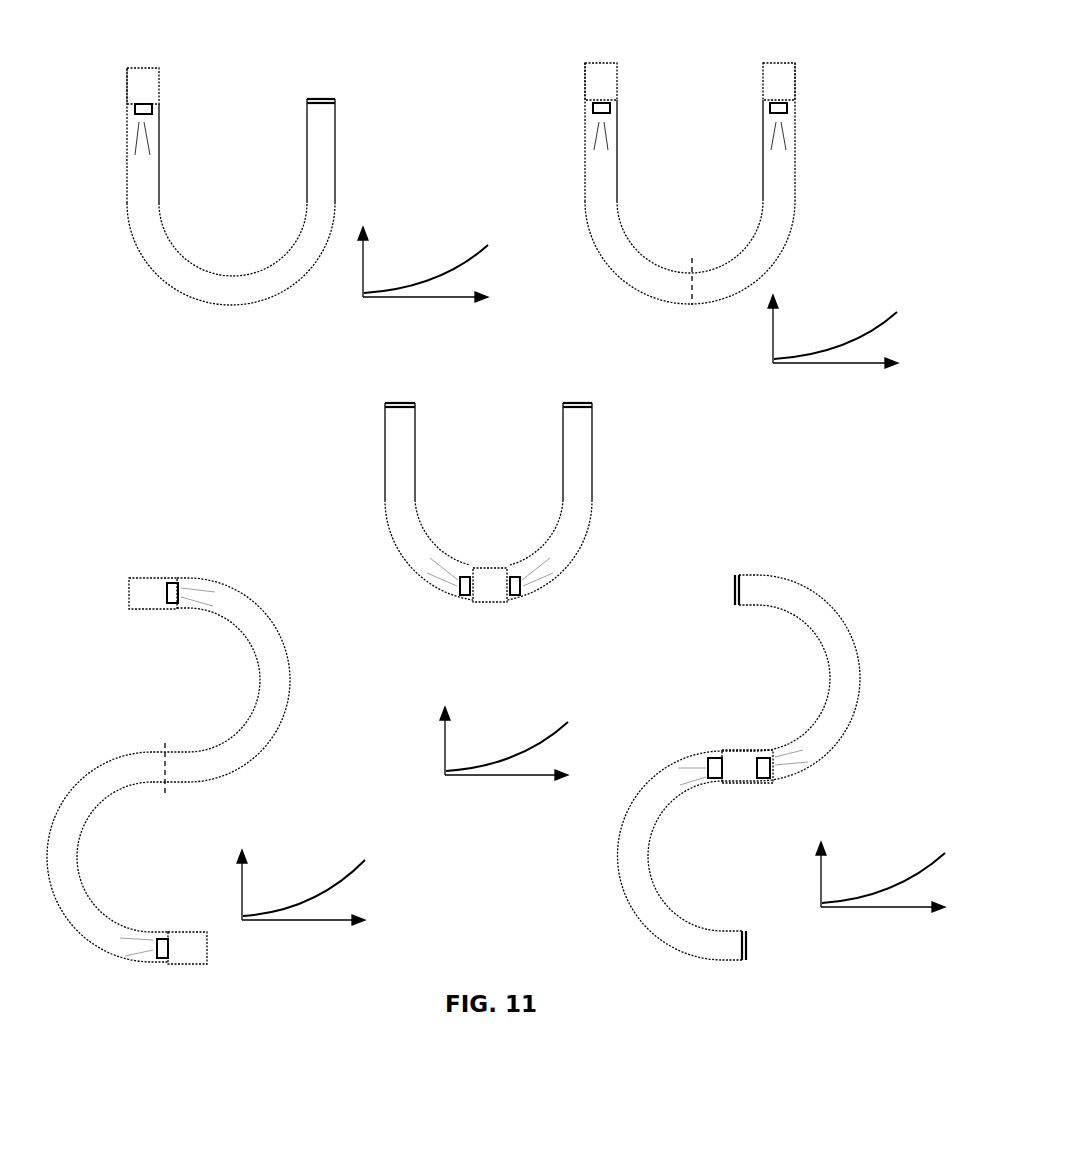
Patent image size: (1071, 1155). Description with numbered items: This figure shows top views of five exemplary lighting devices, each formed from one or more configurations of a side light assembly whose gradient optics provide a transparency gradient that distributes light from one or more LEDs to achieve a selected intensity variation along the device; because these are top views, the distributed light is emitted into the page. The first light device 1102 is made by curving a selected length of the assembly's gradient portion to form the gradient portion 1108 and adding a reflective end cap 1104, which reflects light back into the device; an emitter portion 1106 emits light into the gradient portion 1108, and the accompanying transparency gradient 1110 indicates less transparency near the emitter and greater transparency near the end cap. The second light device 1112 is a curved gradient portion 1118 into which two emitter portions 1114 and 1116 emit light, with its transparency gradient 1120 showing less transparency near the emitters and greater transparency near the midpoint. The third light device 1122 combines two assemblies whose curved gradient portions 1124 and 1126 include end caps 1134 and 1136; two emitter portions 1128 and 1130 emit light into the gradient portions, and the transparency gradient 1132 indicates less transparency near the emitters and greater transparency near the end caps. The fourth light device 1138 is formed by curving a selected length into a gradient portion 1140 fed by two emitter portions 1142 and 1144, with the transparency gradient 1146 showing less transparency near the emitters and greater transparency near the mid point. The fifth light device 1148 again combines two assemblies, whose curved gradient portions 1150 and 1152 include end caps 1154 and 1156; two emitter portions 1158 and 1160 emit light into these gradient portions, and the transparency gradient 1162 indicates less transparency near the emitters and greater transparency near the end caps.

The first light device 1102 is at (228, 179).
The reflective end cap 1104 is at (322, 98).
The emitter portion 1106 is at (118, 65).
The gradient portion 1108 is at (146, 289).
The transparency gradient 1110 is at (402, 209).
The second light device 1112 is at (694, 179).
The emitter portion 1114 is at (575, 63).
The emitter portion 1116 is at (841, 92).
The gradient portion 1118 is at (820, 199).
The transparency gradient 1120 is at (814, 277).
The third light device 1122 is at (454, 508).
The gradient portion 1124 is at (385, 482).
The gradient portion 1126 is at (592, 485).
The emitter portion 1128 is at (483, 600).
The emitter portion 1130 is at (493, 600).
The transparency gradient 1132 is at (498, 717).
The end cap 1134 is at (400, 402).
The end cap 1136 is at (575, 402).
The fourth light device 1138 is at (185, 777).
The gradient portion 1140 is at (211, 723).
The emitter portion 1142 is at (175, 572).
The emitter portion 1144 is at (207, 967).
The transparency gradient 1146 is at (283, 832).
The fifth light device 1148 is at (793, 748).
The gradient portion 1150 is at (875, 636).
The gradient portion 1152 is at (665, 850).
The end cap 1154 is at (734, 582).
The end cap 1156 is at (748, 940).
The emitter portion 1158 is at (773, 748).
The emitter portion 1160 is at (740, 748).
The transparency gradient 1162 is at (862, 822).